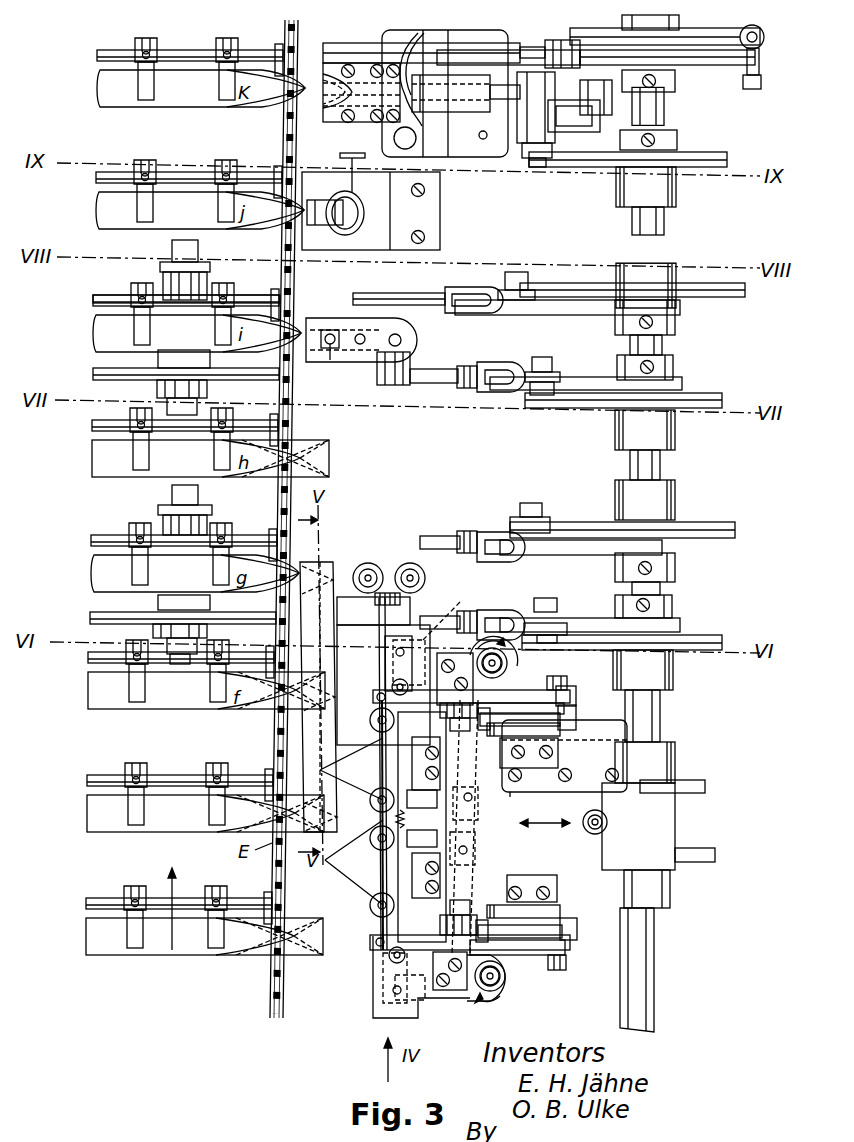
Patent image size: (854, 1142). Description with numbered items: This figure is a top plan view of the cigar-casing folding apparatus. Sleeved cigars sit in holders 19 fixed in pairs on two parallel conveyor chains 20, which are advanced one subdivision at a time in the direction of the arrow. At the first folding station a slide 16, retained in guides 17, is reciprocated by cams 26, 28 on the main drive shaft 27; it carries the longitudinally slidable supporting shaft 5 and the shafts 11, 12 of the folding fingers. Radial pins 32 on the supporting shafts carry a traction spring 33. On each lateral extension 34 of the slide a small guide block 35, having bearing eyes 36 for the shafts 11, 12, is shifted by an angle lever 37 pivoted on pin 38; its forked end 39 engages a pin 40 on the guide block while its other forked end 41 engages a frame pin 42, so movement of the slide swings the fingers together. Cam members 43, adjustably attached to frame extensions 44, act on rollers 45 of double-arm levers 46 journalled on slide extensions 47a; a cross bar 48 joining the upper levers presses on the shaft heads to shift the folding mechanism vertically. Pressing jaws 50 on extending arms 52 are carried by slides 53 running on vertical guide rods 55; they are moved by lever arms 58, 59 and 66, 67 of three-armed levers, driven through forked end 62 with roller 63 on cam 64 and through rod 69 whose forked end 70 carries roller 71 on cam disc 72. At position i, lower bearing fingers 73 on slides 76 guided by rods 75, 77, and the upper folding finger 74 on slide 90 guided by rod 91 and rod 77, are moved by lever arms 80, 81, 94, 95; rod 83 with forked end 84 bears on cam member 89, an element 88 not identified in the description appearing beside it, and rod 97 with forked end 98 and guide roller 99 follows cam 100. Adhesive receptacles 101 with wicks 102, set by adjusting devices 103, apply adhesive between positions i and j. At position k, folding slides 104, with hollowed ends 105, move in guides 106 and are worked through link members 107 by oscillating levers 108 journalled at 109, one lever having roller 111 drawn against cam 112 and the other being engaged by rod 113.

The supporting shaft 5 is at (375, 800).
The shaft 11 is at (376, 915).
The shaft 12 is at (380, 724).
The slide member 16 is at (656, 823).
The guides 17 is at (578, 778).
The holders 19 is at (140, 822).
The conveyor chains 20 is at (283, 500).
The cam 26 is at (686, 860).
The main drive shaft 27 is at (657, 108).
The cam 28 is at (684, 793).
The radially directed pins 32 is at (438, 803).
The traction spring 33 is at (406, 820).
The lateral extension 34 is at (386, 630).
The guide block 35 is at (395, 680).
The bearing eyes 36 is at (373, 724).
The angle lever 37 is at (497, 700).
The pivot pin 38 is at (503, 664).
The forked end 39 is at (428, 640).
The pin 40 is at (395, 654).
The free forked end 41 is at (480, 795).
The pin 42 is at (478, 812).
The cam member 43 is at (561, 707).
The extensions 44 is at (551, 733).
The rollers 45 is at (546, 716).
The double-arm levers 46 is at (561, 691).
The slide extensions 47a is at (459, 720).
The cross bar 48 is at (384, 764).
The pressing jaw 50 is at (334, 862).
The extending arms 52 is at (326, 662).
The upper slide 53 is at (426, 578).
The vertical guide rods 55 is at (372, 563).
The lever arm 58 is at (261, 618).
The lever arm 59 is at (121, 617).
The forked end 62 is at (574, 622).
The roller 63 is at (548, 642).
The cam 64 is at (690, 645).
The lever arm 66 is at (261, 538).
The lever arm 67 is at (119, 538).
The rod 69 is at (448, 540).
The forked end 70 is at (571, 555).
The roller 71 is at (528, 520).
The cam disc 72 is at (696, 530).
The bearing finger 73 is at (327, 348).
The upper folding finger 74 is at (332, 352).
The guide rod 75 is at (357, 348).
The slide 76 is at (388, 362).
The guide rod 77 is at (410, 378).
The lever arm 80 is at (261, 295).
The lever arm 81 is at (126, 295).
The rod 83 is at (441, 293).
The forked end 84 is at (562, 312).
The nut 88 is at (512, 282).
The cam member 89 is at (700, 297).
The slide 90 is at (407, 330).
The guide rod 91 is at (412, 340).
The lever arm 94 is at (261, 380).
The lever arm 95 is at (134, 380).
The rod 97 is at (463, 392).
The forked end 98 is at (573, 377).
The guide roller 99 is at (538, 400).
The cam 100 is at (696, 408).
The adhesive receptacle 101 is at (386, 250).
The adhesive wicks 102 is at (340, 232).
The regulating devices 103 is at (338, 171).
The folding slides 104 is at (375, 68).
The ends 105 is at (333, 98).
The guides 106 is at (482, 122).
The link members 107 is at (589, 132).
The oscillating levers 108 is at (529, 140).
The journal 109 is at (567, 70).
The roller 111 is at (545, 163).
The cam 112 is at (612, 34).
The rod 113 is at (448, 95).